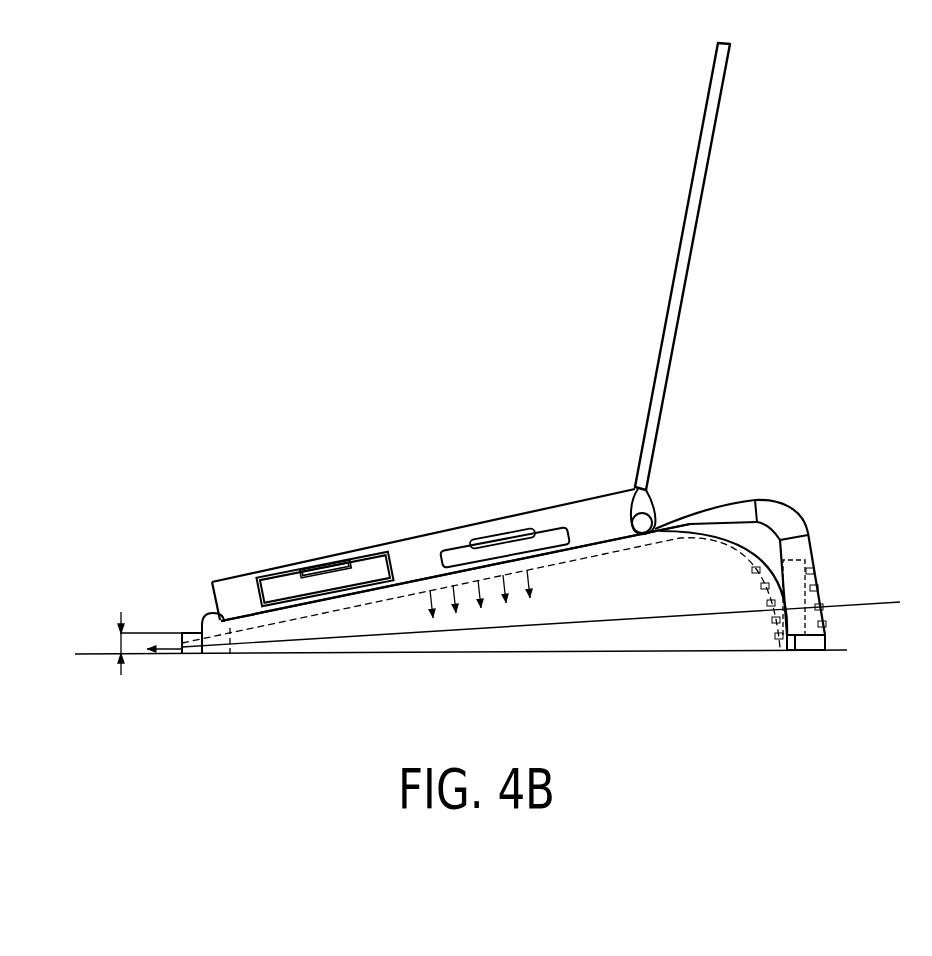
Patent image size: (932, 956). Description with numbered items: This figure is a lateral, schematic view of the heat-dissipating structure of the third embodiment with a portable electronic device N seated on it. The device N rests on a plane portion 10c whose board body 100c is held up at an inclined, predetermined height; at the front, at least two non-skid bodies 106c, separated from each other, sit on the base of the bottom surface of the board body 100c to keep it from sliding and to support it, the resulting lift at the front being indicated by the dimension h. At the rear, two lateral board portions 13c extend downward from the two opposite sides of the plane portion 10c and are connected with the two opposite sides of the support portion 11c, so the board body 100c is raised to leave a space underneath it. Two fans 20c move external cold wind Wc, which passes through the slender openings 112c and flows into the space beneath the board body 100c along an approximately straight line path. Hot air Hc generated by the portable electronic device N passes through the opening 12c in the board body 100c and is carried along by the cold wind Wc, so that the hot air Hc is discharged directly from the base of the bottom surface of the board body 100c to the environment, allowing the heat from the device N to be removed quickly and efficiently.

The portable electronic device N is at (647, 292).
The plane portion 10c is at (275, 610).
The board body 100c is at (338, 605).
The opening 12c is at (403, 582).
The fan 20c is at (800, 560).
The support portion 11c is at (794, 501).
The slender opening 112c is at (818, 651).
The non-skid body 106c is at (217, 654).
The lateral board portion 13c is at (715, 630).
The external cold wind Wc is at (541, 618).
The hot air Hc is at (503, 594).
The height of front portion h is at (139, 643).